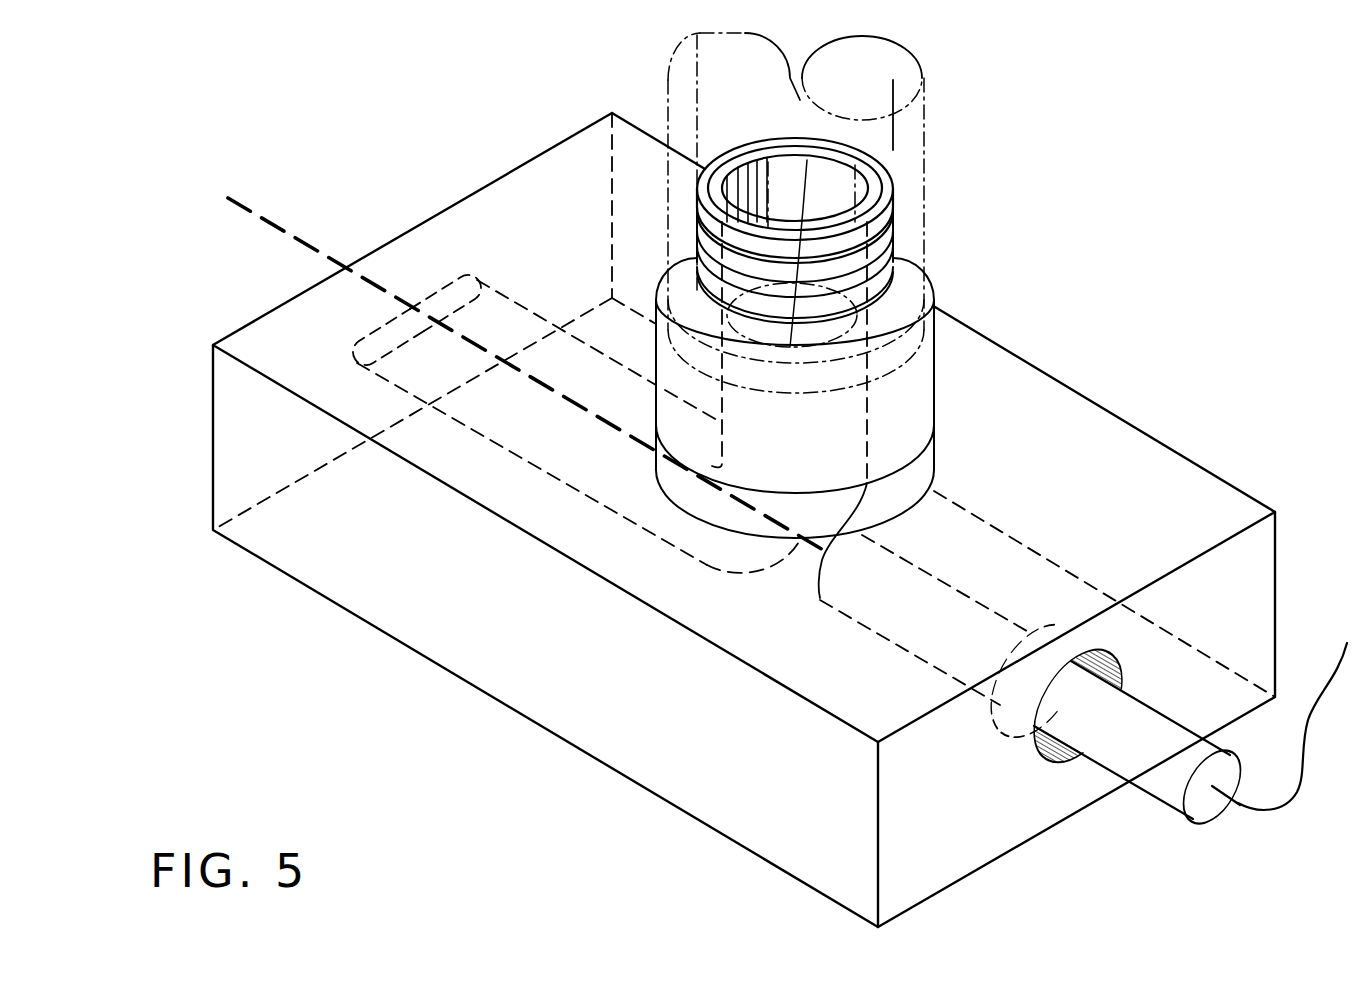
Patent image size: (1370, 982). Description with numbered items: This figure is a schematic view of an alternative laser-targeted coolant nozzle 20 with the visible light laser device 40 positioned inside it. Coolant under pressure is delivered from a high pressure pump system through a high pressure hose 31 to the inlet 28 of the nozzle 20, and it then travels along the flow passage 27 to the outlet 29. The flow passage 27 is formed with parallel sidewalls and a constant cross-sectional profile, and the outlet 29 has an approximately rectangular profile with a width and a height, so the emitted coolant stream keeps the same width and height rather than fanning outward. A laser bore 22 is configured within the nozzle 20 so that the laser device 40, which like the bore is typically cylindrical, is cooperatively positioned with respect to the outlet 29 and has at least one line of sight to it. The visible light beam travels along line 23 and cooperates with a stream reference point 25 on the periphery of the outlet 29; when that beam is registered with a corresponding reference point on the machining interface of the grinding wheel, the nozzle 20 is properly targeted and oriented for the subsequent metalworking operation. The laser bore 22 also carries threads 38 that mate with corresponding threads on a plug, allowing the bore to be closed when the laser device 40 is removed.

The nozzle 20 is at (635, 150).
The laser bore 22 is at (887, 640).
The line 23 is at (277, 220).
The stream reference point 25 is at (407, 303).
The flow passage 27 is at (477, 430).
The inlet 28 is at (790, 140).
The outlet 29 is at (350, 352).
The high pressure hose 31 is at (926, 132).
The threads 38 is at (1122, 676).
The laser device 40 is at (1160, 722).